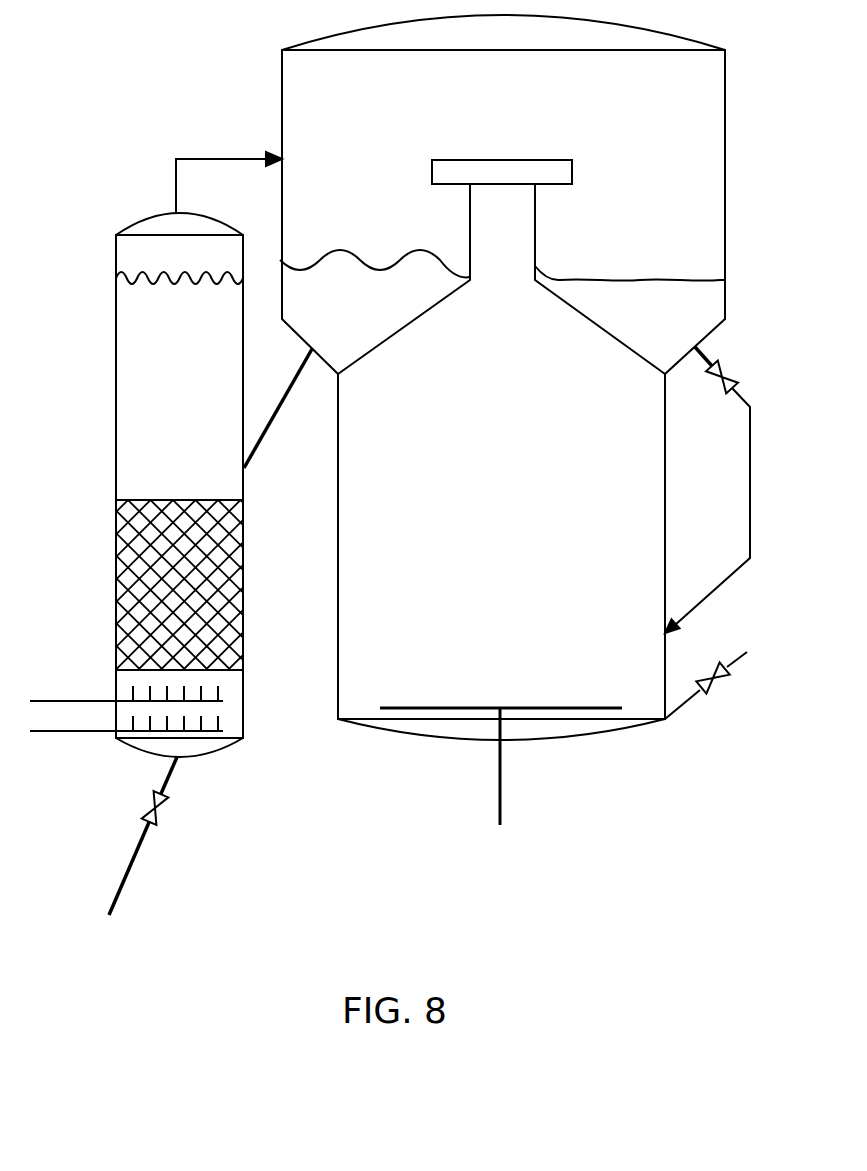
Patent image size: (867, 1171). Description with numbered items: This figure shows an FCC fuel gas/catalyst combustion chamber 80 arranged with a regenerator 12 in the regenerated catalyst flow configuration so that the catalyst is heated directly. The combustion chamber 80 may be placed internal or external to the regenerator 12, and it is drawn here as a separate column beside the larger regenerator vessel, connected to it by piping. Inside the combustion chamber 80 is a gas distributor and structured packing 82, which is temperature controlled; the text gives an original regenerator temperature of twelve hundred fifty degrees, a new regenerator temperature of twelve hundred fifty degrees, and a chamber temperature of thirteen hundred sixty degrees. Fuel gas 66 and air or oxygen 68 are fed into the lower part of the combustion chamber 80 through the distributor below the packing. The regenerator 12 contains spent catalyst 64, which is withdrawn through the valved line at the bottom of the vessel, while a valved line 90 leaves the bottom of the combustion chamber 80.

The regenerator 12 is at (282, 125).
The FCC fuel gas/catalyst combustion chamber 80 is at (116, 330).
The gas distributor and structured packing 82 is at (130, 588).
The fuel gas 66 is at (83, 700).
The air or oxygen 68 is at (92, 733).
The bottom outlet pipe with valve 90 is at (133, 862).
The spent catalyst 64 is at (680, 710).